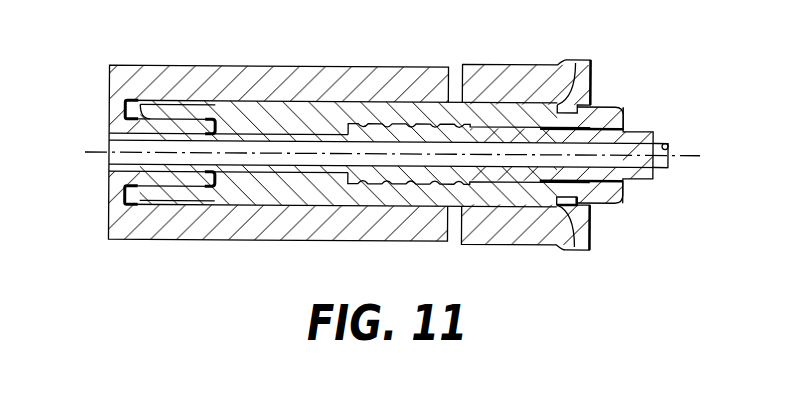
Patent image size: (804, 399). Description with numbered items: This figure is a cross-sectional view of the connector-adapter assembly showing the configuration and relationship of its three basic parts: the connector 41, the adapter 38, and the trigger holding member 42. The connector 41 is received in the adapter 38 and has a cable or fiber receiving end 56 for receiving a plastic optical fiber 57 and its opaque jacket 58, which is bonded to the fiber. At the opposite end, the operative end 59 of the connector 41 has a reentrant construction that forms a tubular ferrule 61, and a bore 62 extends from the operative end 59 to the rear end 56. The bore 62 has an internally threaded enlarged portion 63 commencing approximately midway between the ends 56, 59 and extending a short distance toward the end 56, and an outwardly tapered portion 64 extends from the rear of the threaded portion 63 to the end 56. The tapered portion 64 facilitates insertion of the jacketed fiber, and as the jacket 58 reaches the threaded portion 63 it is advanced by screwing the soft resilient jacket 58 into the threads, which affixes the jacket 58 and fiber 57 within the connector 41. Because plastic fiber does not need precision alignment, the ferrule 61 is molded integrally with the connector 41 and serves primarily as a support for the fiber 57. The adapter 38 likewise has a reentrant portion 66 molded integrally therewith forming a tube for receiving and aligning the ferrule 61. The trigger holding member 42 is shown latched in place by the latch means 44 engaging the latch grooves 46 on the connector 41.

The adapter member 38 is at (191, 65).
The connector member 41 is at (607, 102).
The trigger holding member 42 is at (495, 62).
The latching means 44 is at (590, 101).
The grooves 46 is at (558, 100).
The cable or fiber receiving end 56 is at (620, 187).
The plastic optical fiber 57 is at (658, 169).
The opaque jacket 58 is at (637, 128).
The operative end 59 is at (118, 168).
The tubular ferrule 61 is at (110, 138).
The bore 62 is at (245, 156).
The internally threaded enlarged portion 63 is at (372, 120).
The outwardly tapered portion 64 is at (607, 180).
The reentrant portion 66 is at (135, 175).